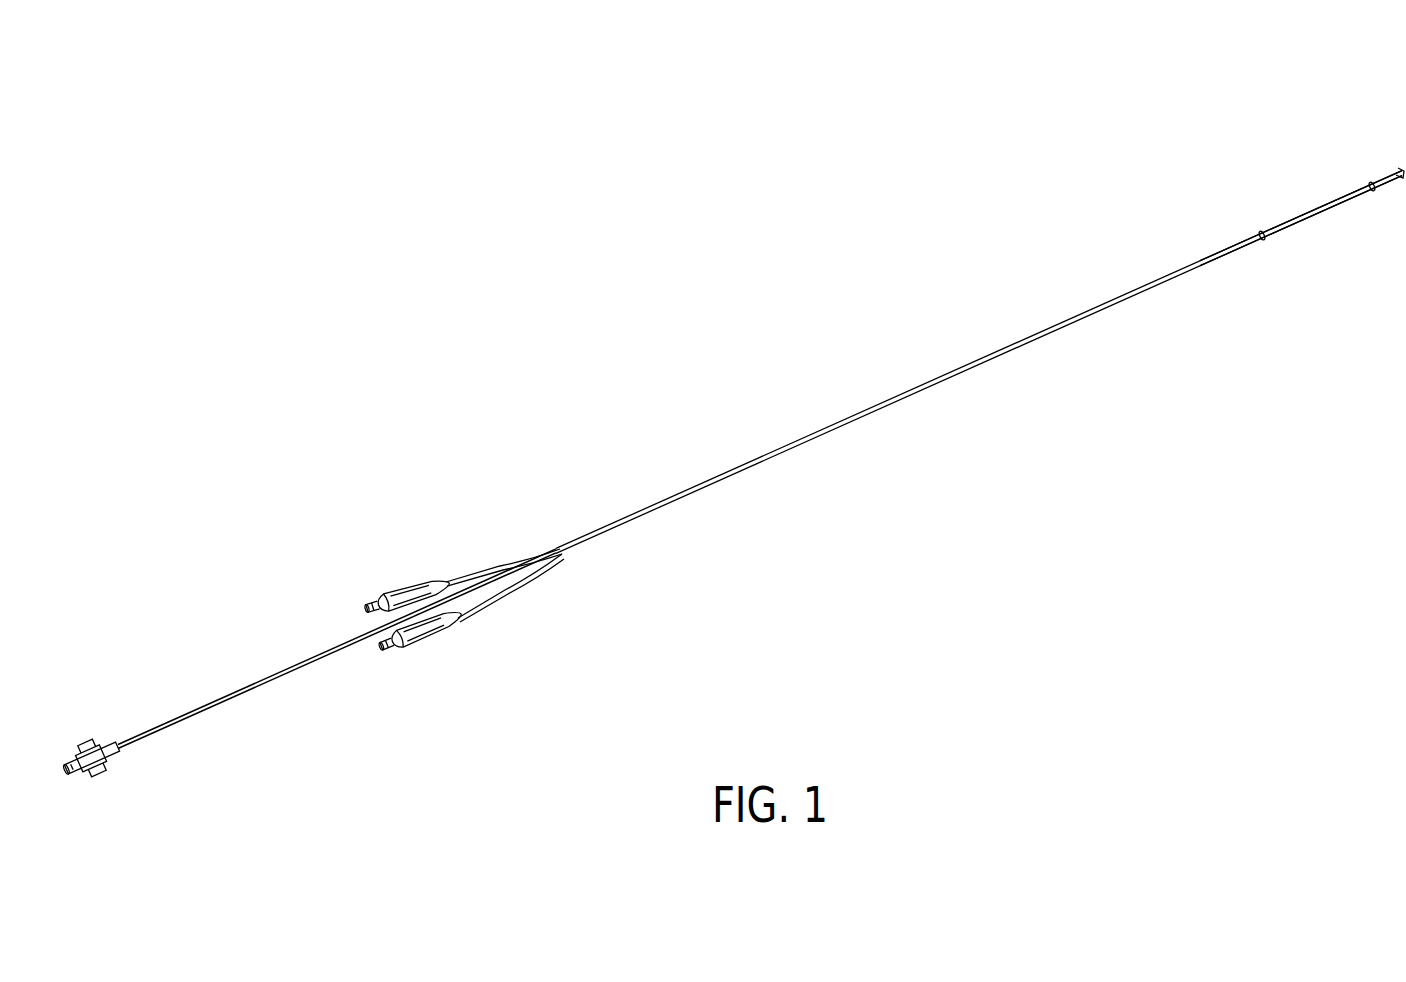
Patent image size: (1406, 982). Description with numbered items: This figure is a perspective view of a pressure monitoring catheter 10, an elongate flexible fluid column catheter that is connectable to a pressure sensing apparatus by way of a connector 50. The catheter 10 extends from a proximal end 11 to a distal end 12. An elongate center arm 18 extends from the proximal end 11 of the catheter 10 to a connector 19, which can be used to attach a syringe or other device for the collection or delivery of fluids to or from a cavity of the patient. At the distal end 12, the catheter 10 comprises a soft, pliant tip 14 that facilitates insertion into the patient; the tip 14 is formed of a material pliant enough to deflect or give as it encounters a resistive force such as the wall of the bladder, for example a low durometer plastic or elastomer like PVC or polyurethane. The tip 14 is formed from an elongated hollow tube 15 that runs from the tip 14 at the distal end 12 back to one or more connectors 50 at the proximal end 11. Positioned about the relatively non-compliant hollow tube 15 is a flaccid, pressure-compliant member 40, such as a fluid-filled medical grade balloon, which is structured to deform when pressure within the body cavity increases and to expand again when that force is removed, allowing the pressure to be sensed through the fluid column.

The pressure monitoring catheter 10 is at (516, 246).
The proximal end 11 is at (539, 660).
The distal end 12 is at (1316, 122).
The soft tip 14 is at (1403, 169).
The hollow tube 15 is at (1000, 350).
The center arm 18 is at (240, 690).
The connector 19 is at (93, 753).
The pressure-compliant member 40 is at (1261, 233).
The connector 50 is at (410, 590).